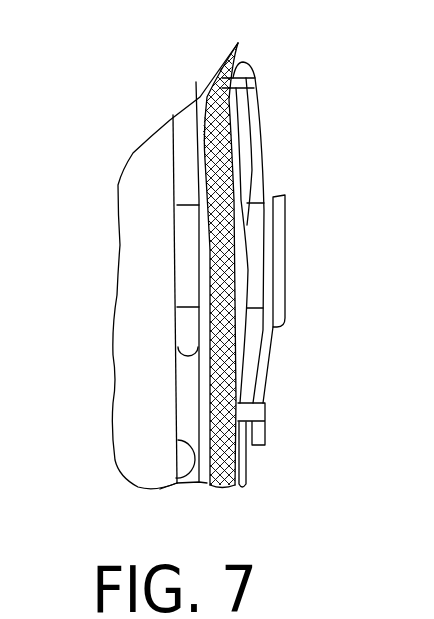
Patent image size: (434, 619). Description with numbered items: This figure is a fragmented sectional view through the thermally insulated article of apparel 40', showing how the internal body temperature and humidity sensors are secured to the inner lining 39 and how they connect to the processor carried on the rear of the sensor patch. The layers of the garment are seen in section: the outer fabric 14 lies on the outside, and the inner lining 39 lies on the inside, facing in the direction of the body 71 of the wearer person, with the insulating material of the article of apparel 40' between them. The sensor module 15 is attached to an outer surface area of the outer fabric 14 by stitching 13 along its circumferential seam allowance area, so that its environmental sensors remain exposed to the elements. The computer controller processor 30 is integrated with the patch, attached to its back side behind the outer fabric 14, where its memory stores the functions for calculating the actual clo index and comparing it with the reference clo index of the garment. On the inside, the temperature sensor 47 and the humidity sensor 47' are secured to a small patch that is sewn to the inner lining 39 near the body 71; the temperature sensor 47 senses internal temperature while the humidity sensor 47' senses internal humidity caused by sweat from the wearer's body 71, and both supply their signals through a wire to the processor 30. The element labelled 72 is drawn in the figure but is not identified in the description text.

The stitching 13 is at (248, 92).
The outer fabric 14 is at (257, 118).
The sensor module 15 is at (290, 270).
The computer controller processor 30 is at (250, 228).
The inner lining 39 is at (200, 198).
The article of apparel 40' is at (293, 454).
The temperature sensor 47 is at (133, 256).
The humidity sensor 47' is at (132, 378).
The body 71 is at (130, 393).
The body bottom edge 72 is at (160, 489).